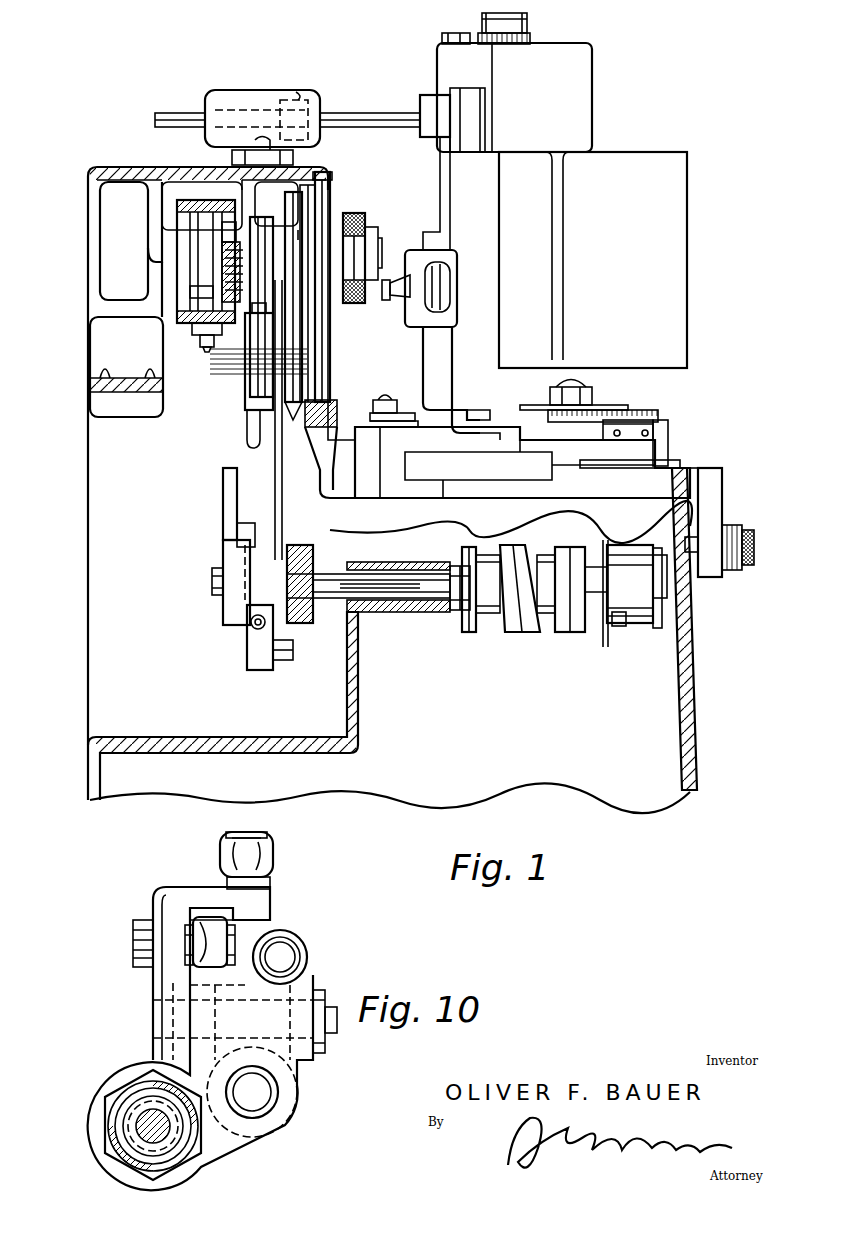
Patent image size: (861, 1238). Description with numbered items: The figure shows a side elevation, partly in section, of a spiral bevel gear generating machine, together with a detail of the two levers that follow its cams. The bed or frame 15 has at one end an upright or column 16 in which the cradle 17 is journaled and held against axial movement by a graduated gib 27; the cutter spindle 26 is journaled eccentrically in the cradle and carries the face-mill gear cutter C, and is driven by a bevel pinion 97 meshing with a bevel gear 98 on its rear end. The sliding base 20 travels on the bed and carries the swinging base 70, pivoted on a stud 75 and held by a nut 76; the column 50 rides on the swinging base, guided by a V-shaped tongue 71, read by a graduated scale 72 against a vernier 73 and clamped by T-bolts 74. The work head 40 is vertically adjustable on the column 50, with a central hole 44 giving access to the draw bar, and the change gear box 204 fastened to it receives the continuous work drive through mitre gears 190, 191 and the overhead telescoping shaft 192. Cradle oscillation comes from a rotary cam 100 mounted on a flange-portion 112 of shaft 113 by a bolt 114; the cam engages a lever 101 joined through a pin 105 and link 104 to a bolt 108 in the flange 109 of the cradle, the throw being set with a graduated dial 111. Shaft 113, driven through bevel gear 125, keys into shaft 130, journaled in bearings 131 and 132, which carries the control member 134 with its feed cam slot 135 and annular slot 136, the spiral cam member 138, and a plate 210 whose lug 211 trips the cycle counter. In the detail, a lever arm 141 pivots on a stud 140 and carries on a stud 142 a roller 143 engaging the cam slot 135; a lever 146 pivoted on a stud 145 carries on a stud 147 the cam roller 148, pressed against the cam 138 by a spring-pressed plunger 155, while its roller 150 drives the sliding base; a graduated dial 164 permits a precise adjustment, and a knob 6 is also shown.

In FIG. 1, the bed or frame 15 is at (685, 705).
In FIG. 1, the upright or column 16 is at (98, 497).
In FIG. 1, the cradle 17 is at (330, 200).
In FIG. 1, the sliding base 20 is at (542, 491).
In FIG. 1, the cutter spindle 26 is at (222, 258).
In FIG. 1, the gib 27 is at (318, 395).
In FIG. 1, the work head 40 is at (430, 346).
In FIG. 1, the central hole 44 is at (205, 347).
In FIG. 1, the column 50 is at (580, 122).
In FIG. 1, the knob 6 is at (386, 300).
In FIG. 1, the face-mill gear cutter C is at (378, 255).
In FIG. 1, the swinging base 70 is at (668, 443).
In FIG. 1, the V-shaped tongue 71 is at (478, 418).
In FIG. 1, the graduated scale 72 is at (648, 412).
In FIG. 1, the vernier 73 is at (628, 432).
In FIG. 1, the T-bolts 74 is at (575, 380).
In FIG. 1, the stud 75 is at (392, 400).
In FIG. 1, the nut 76 is at (404, 418).
In FIG. 1, the bevel pinion 97 is at (190, 290).
In FIG. 1, the bevel gear 98 is at (222, 237).
In FIG. 1, the rotary cam 100 is at (222, 486).
In FIG. 1, the lever 101 is at (222, 530).
In FIG. 1, the link 104 is at (283, 498).
In FIG. 1, the pin 105 is at (293, 655).
In FIG. 1, the bolt 108 is at (250, 330).
In FIG. 1, the flange 109 is at (290, 297).
In FIG. 1, the graduated dial 111 is at (250, 628).
In FIG. 1, the flange-portion 112 is at (244, 525).
In FIG. 1, the shaft 113 is at (420, 604).
In FIG. 1, the bolt 114 is at (210, 588).
In FIG. 1, the bevel gear 125 is at (313, 625).
In FIG. 1, the shaft 130 is at (455, 612).
In FIG. 1, the bearing 131 is at (385, 614).
In FIG. 1, the bearing 132 is at (633, 632).
In FIG. 1, the control member 134 is at (533, 634).
In FIG. 1, the cam slot 135 is at (540, 555).
In FIG. 1, the annular slot 136 is at (488, 553).
In FIG. 1, the cam member 138 is at (580, 634).
In FIG. 1, the graduated dial 164 is at (735, 572).
In FIG. 1, the mitre gear 190 is at (240, 145).
In FIG. 1, the mitre gear 191 is at (295, 94).
In FIG. 1, the overhead telescoping shaft 192 is at (365, 118).
In FIG. 1, the change gear box 204 is at (678, 290).
In FIG. 1, the plate 210 is at (630, 628).
In FIG. 1, the lug 211 is at (652, 543).
In FIG. 10, the stud 140 is at (252, 1092).
In FIG. 10, the lever arm 141 is at (307, 1067).
In FIG. 10, the stud 142 is at (285, 952).
In FIG. 10, the roller 143 is at (307, 962).
In FIG. 10, the stud 145 is at (247, 1005).
In FIG. 10, the lever 146 is at (168, 985).
In FIG. 10, the stud 147 is at (160, 890).
In FIG. 10, the cam roller 148 is at (208, 918).
In FIG. 10, the roller 150 is at (270, 855).
In FIG. 10, the spring-pressed plunger 155 is at (140, 1125).